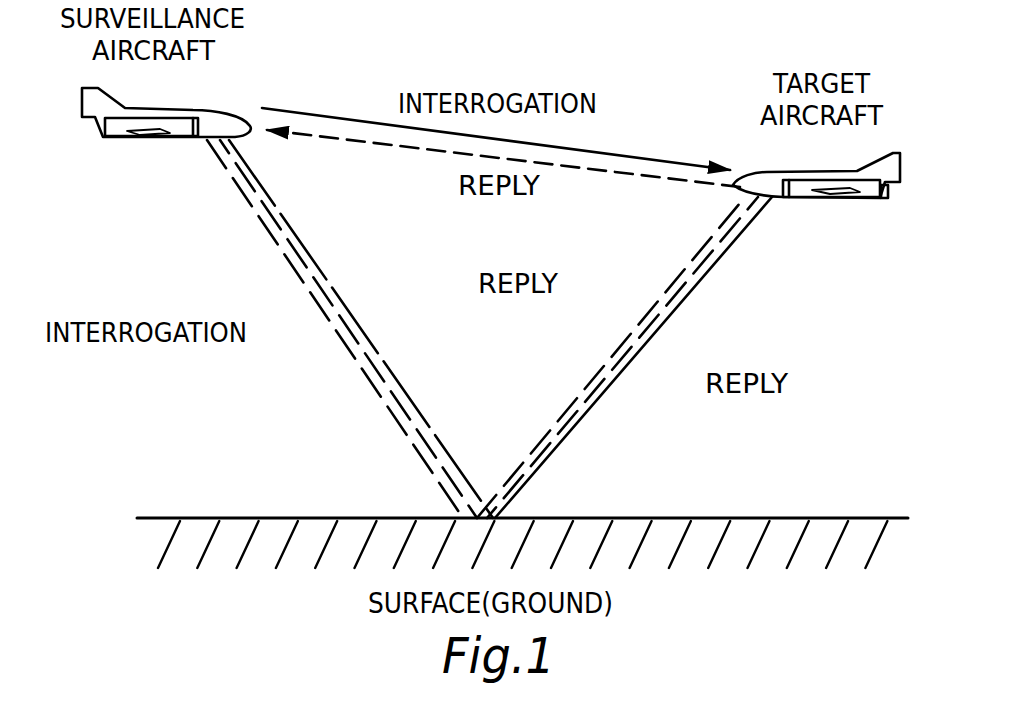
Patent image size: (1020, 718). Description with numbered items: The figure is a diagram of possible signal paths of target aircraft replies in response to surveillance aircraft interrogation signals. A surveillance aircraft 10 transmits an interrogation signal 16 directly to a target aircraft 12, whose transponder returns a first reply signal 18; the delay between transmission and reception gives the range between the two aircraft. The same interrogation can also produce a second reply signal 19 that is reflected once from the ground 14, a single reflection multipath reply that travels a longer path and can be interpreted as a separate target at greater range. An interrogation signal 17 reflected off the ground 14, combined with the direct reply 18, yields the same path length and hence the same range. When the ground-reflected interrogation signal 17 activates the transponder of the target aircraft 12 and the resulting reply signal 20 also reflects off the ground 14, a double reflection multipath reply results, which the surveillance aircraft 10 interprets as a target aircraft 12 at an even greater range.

The surveillance aircraft 10 is at (223, 112).
The target aircraft 12 is at (867, 198).
The ground 14 is at (857, 547).
The interrogation signal 16 is at (349, 118).
The interrogation signal 17 is at (322, 302).
The first reply signal 18 is at (613, 172).
The second reply signal 19 is at (597, 375).
The reply signal 20 is at (662, 340).